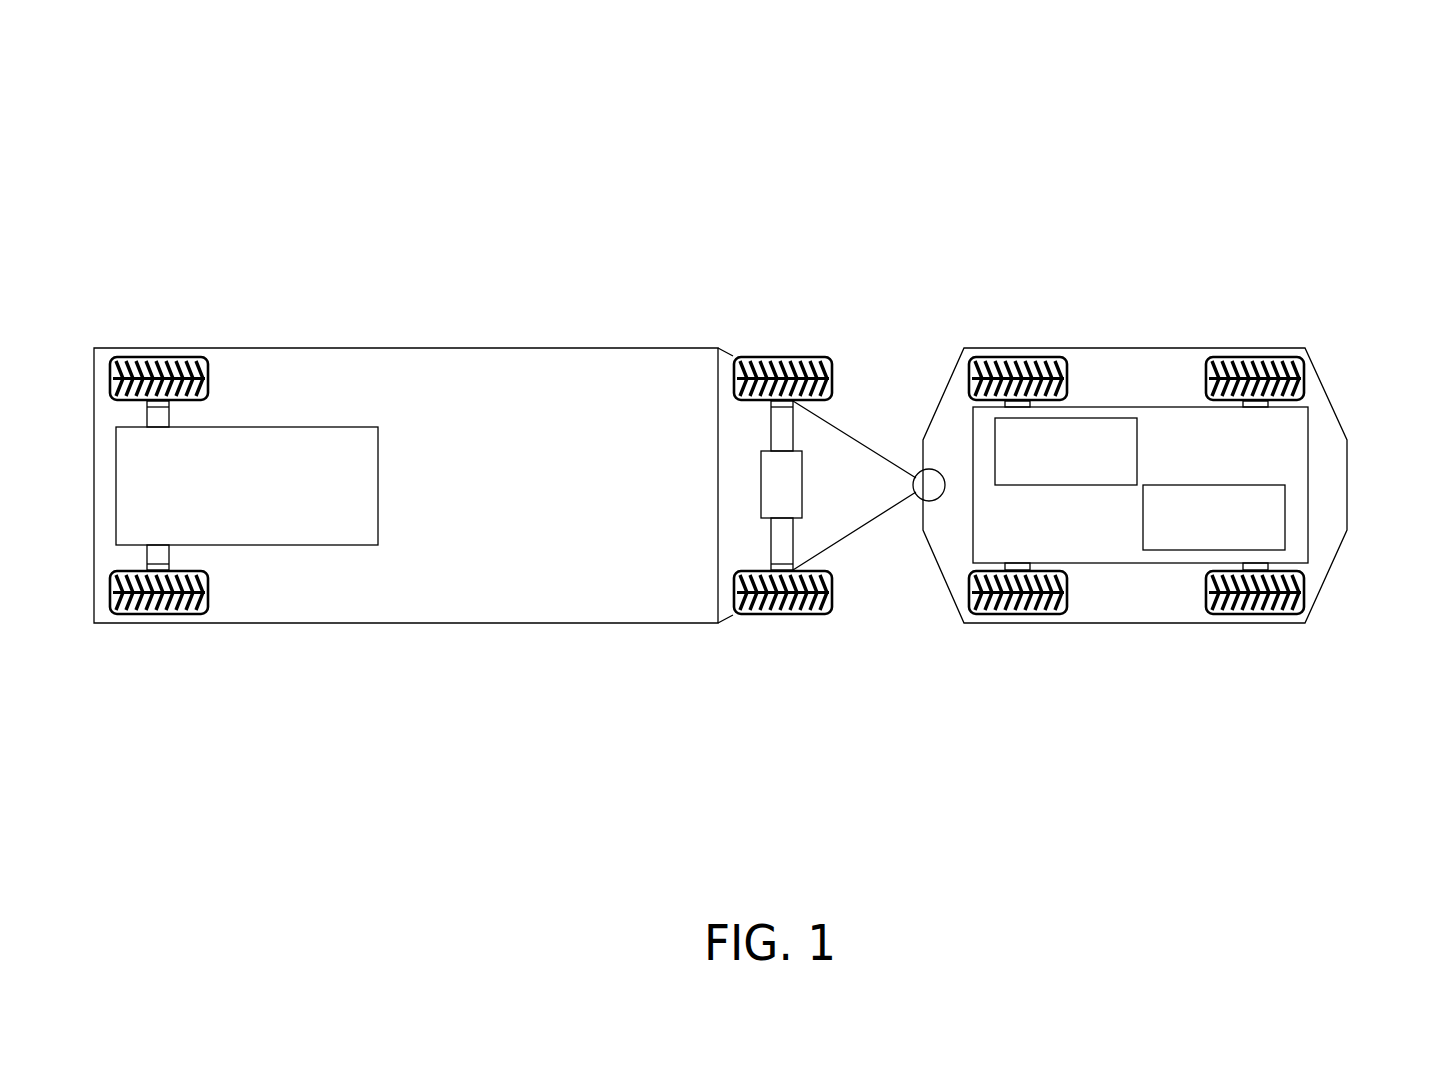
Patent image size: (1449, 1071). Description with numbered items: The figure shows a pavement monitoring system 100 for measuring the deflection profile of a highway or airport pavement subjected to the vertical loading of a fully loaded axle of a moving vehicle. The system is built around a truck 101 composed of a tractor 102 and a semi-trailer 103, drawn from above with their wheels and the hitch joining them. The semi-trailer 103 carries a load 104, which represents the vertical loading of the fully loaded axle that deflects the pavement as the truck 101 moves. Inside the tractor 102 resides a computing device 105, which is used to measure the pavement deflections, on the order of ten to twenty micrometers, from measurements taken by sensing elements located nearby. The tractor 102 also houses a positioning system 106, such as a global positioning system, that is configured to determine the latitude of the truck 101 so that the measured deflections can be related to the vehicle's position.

The pavement monitoring system 100 is at (1372, 137).
The truck 101 is at (1347, 667).
The tractor 102 is at (1183, 385).
The semi-trailer 103 is at (565, 365).
The load 104 is at (335, 452).
The computing device 105 is at (1120, 428).
The positioning system 106 is at (1158, 540).